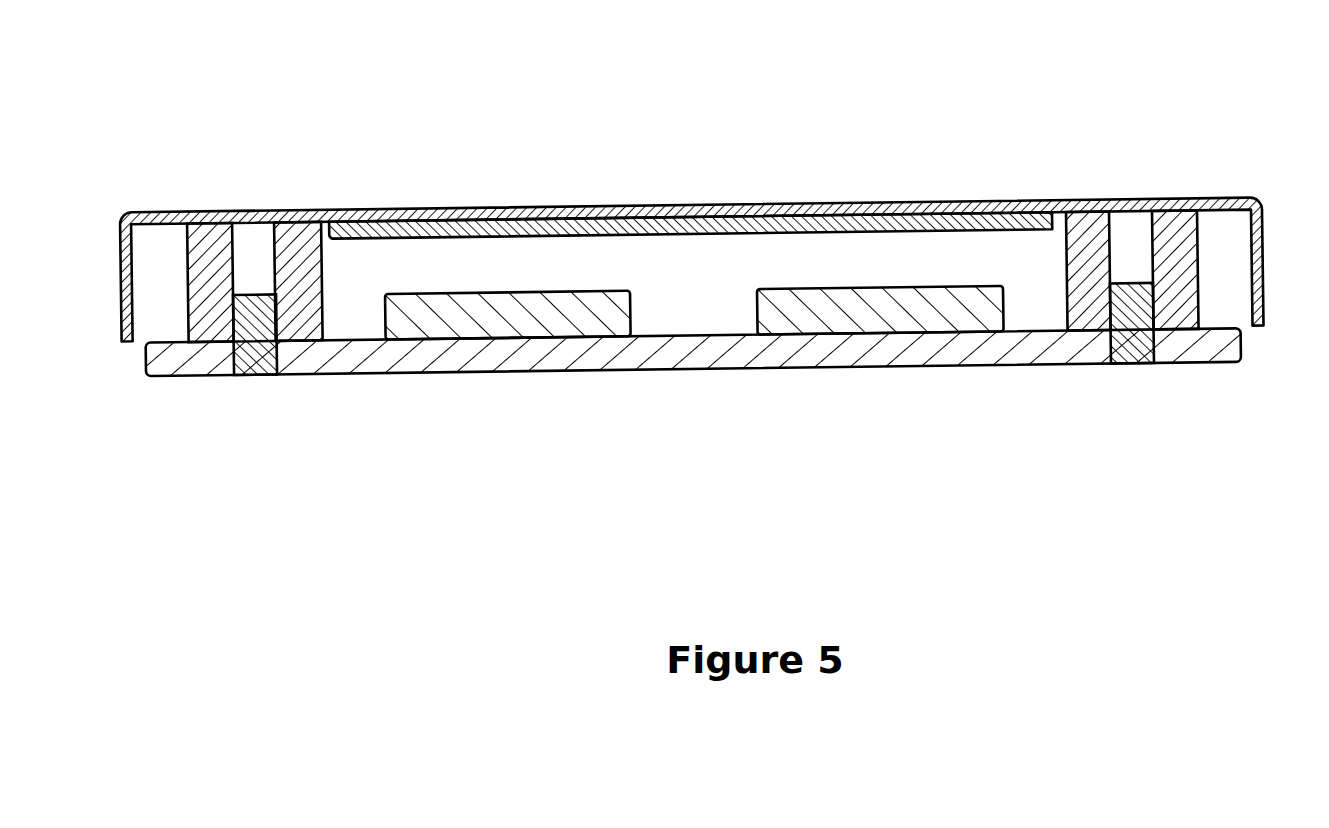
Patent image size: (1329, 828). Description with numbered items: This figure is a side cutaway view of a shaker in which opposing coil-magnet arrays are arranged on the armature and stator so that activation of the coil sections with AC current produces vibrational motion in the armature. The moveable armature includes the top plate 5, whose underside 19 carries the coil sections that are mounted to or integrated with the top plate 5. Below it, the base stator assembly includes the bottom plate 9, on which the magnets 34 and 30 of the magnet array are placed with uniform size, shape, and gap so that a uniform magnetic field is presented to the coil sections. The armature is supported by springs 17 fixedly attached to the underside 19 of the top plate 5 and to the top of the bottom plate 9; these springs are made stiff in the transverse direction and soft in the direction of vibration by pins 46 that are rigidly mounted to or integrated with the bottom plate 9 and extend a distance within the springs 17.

The top plate 5 is at (1057, 203).
The underside of the top plate 19 is at (647, 233).
The bottom plate 9 is at (356, 350).
The spring 17 is at (1180, 283).
The pin 46 is at (248, 372).
The magnet 34 is at (548, 318).
The magnet 30 is at (948, 310).